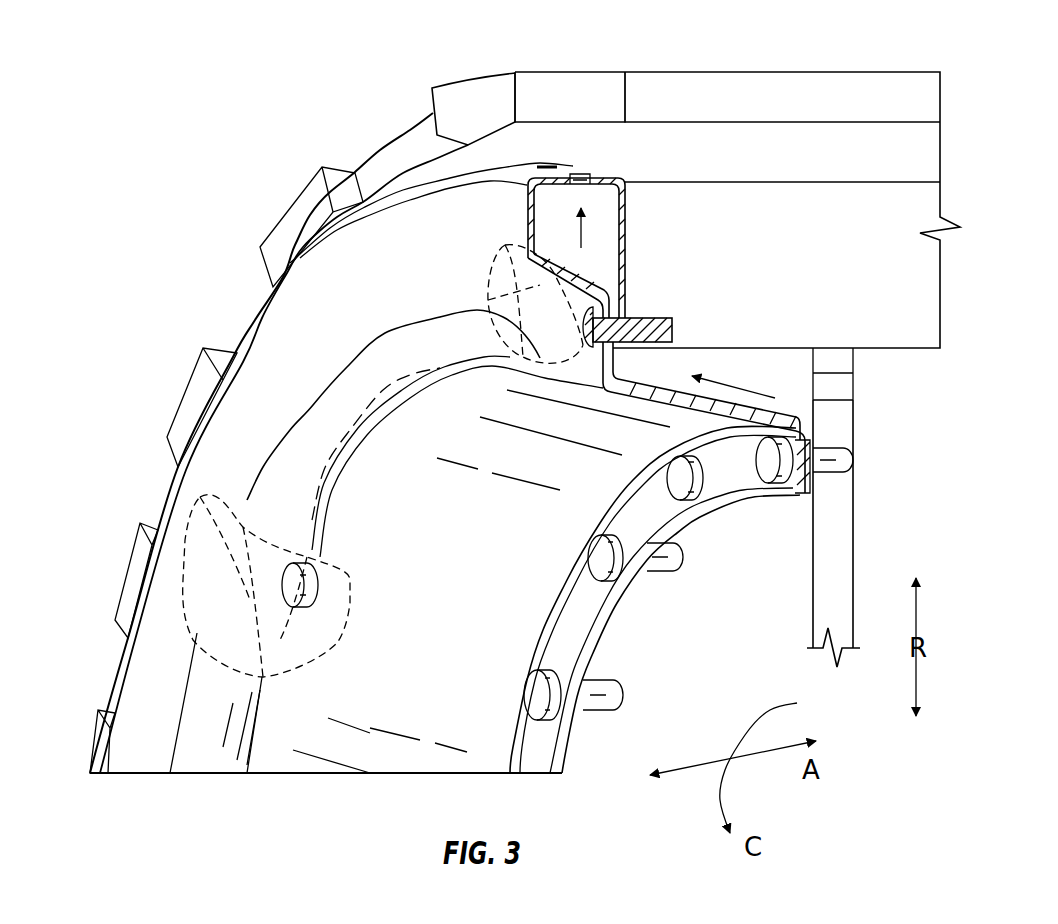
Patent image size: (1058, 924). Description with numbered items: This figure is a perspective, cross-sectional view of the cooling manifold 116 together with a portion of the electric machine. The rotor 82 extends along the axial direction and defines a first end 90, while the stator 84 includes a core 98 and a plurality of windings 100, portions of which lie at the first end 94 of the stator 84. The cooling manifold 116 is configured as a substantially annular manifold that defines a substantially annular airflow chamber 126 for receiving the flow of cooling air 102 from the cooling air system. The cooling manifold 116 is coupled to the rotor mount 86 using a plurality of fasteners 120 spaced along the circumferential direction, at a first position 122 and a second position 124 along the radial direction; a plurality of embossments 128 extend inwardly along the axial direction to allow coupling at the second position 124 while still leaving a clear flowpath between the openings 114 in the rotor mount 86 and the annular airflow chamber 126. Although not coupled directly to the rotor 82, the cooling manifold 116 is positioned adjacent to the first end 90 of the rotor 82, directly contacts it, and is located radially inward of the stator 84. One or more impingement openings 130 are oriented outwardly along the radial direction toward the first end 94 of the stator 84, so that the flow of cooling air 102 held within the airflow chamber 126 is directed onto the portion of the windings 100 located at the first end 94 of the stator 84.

The rotor 82 is at (801, 263).
The stator 84 is at (778, 55).
The rotor mount 86 is at (847, 552).
The first end 90 is at (662, 250).
The first end 94 is at (410, 113).
The core 98 is at (801, 110).
The plurality of windings 100 is at (586, 110).
The flow of cooling air 102 is at (592, 232).
The openings 114 is at (858, 389).
The cooling manifold 116 is at (155, 688).
The fasteners 120 is at (598, 332).
The first position 122 is at (762, 470).
The second position 124 is at (548, 348).
The substantially annular airflow chamber 126 is at (556, 236).
The embossments 128 is at (538, 324).
The impingement openings 130 is at (582, 170).